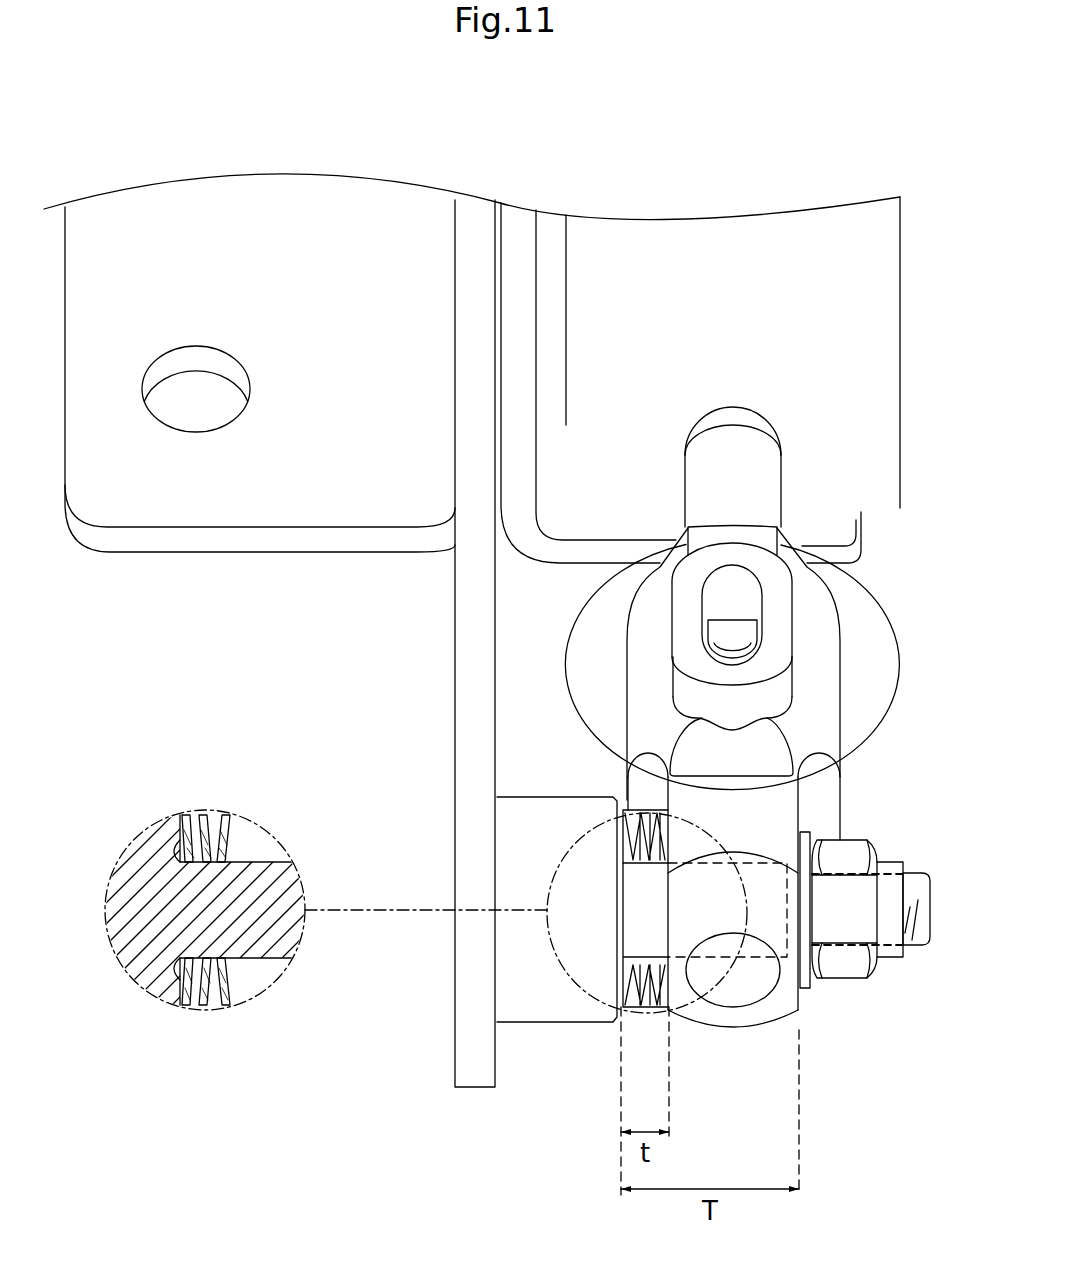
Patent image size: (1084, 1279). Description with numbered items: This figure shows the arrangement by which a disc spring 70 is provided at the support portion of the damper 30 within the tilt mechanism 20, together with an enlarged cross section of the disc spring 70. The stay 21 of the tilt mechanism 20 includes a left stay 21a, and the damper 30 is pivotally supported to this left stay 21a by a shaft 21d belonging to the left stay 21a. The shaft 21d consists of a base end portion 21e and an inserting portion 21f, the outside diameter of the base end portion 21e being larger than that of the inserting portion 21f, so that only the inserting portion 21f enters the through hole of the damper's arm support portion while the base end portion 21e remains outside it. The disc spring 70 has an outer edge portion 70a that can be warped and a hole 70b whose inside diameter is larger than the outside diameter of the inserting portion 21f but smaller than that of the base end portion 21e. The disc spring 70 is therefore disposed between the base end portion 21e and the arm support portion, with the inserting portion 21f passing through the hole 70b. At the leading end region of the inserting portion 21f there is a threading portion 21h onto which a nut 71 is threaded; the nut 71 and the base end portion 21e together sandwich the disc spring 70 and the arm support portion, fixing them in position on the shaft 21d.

The tilt mechanism 20 is at (927, 240).
The damper 30 is at (887, 316).
The stay 21 is at (473, 687).
The left stay 21a is at (462, 690).
The shaft 21d is at (473, 975).
The base end portion 21e is at (553, 1010).
The inserting portion 21f is at (740, 880).
The threading portion 21h is at (915, 945).
The disc spring 70 is at (382, 905).
The outer edge portion 70a is at (640, 810).
The hole 70b is at (672, 990).
The nut 71 is at (847, 967).